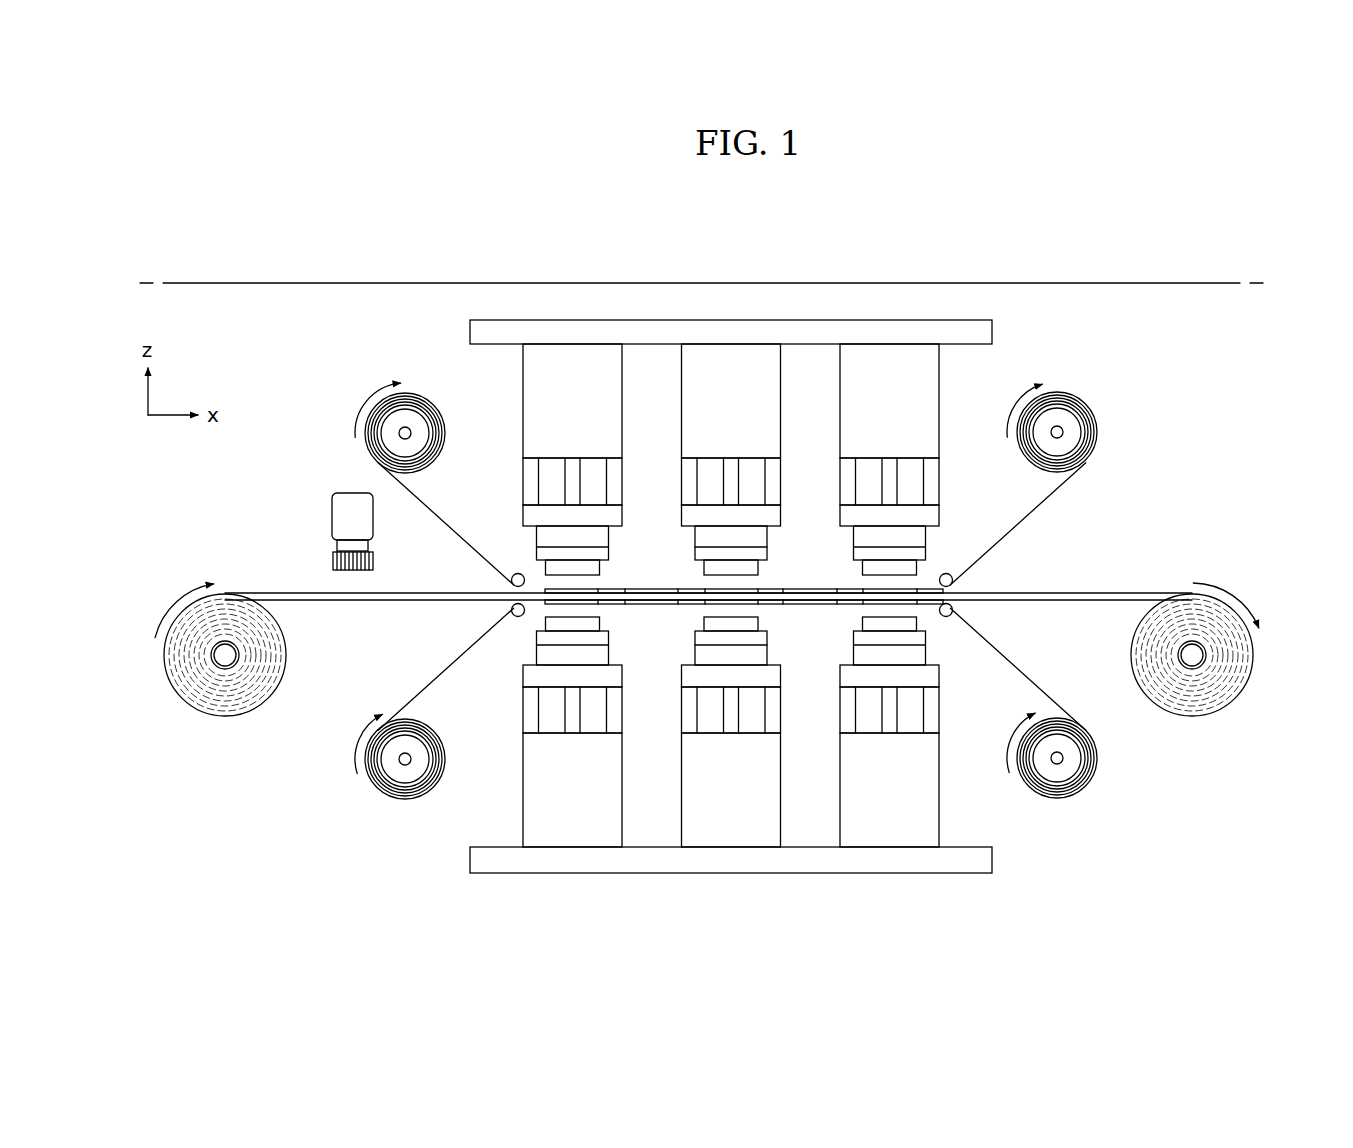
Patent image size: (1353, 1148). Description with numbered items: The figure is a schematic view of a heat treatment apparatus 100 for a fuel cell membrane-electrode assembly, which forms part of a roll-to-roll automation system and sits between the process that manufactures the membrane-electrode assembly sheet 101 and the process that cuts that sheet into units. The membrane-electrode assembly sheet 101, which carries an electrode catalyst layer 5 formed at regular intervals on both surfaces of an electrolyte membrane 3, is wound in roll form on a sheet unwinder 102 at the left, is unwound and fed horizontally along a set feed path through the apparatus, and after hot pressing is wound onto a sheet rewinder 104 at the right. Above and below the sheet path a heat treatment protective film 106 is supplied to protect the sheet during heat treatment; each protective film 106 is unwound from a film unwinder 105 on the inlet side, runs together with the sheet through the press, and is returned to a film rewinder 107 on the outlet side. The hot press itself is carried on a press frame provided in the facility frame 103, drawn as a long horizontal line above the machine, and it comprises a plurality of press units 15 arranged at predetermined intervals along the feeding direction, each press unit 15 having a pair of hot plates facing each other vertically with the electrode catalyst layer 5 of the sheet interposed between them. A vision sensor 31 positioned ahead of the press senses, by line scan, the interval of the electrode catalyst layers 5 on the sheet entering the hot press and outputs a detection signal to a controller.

The heat treatment apparatus 100 is at (714, 225).
The membrane-electrode assembly sheet 101 is at (370, 604).
The sheet unwinder 102 is at (225, 655).
The facility frame 103 is at (312, 283).
The sheet rewinder 104 is at (1192, 655).
The film unwinder 105 is at (405, 433).
The heat treatment protective film 106 is at (398, 482).
The film rewinder 107 is at (1057, 432).
The press unit 15 is at (625, 504).
The electrolyte membrane 3 is at (564, 598).
The electrode catalyst layer 5 is at (590, 593).
The vision sensor 31 is at (332, 510).